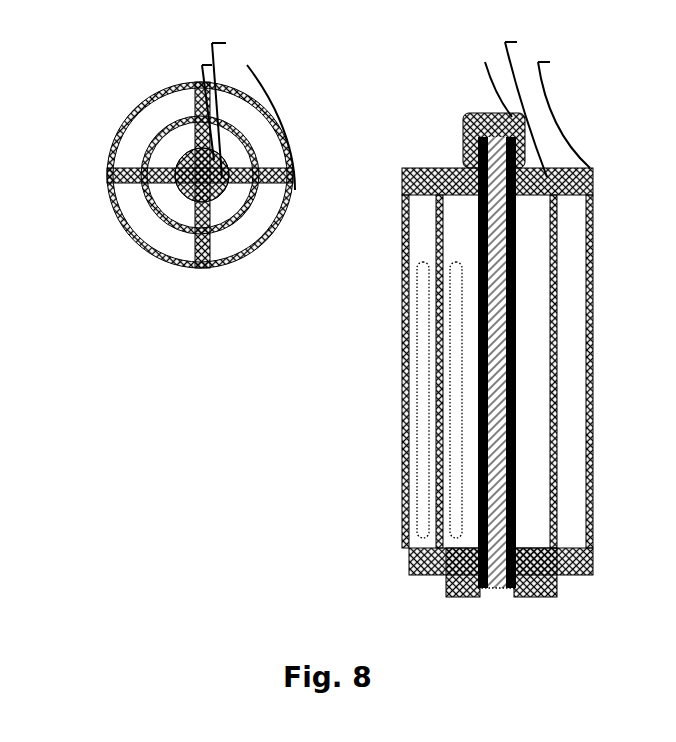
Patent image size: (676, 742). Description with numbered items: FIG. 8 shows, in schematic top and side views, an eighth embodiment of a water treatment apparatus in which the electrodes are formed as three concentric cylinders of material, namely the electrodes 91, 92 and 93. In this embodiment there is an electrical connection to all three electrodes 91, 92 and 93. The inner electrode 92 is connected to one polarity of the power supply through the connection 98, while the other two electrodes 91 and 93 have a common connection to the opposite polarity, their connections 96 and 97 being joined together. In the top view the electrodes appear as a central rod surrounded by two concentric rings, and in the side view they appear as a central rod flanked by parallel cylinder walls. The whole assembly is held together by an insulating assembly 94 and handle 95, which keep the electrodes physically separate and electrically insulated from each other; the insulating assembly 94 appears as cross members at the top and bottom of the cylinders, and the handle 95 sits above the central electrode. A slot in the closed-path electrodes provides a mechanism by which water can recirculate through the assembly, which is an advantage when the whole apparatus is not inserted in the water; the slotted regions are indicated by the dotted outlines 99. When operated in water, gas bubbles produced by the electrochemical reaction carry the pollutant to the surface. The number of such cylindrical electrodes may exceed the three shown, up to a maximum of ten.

The electrode 91 is at (183, 186).
The inner electrode 92 is at (135, 153).
The electrode 93 is at (120, 113).
The insulating assembly 94 is at (188, 212).
The handle 95 is at (231, 190).
The connection 96 is at (217, 65).
The connection 97 is at (275, 98).
The connection 98 is at (231, 43).
The heating element 99 is at (408, 271).